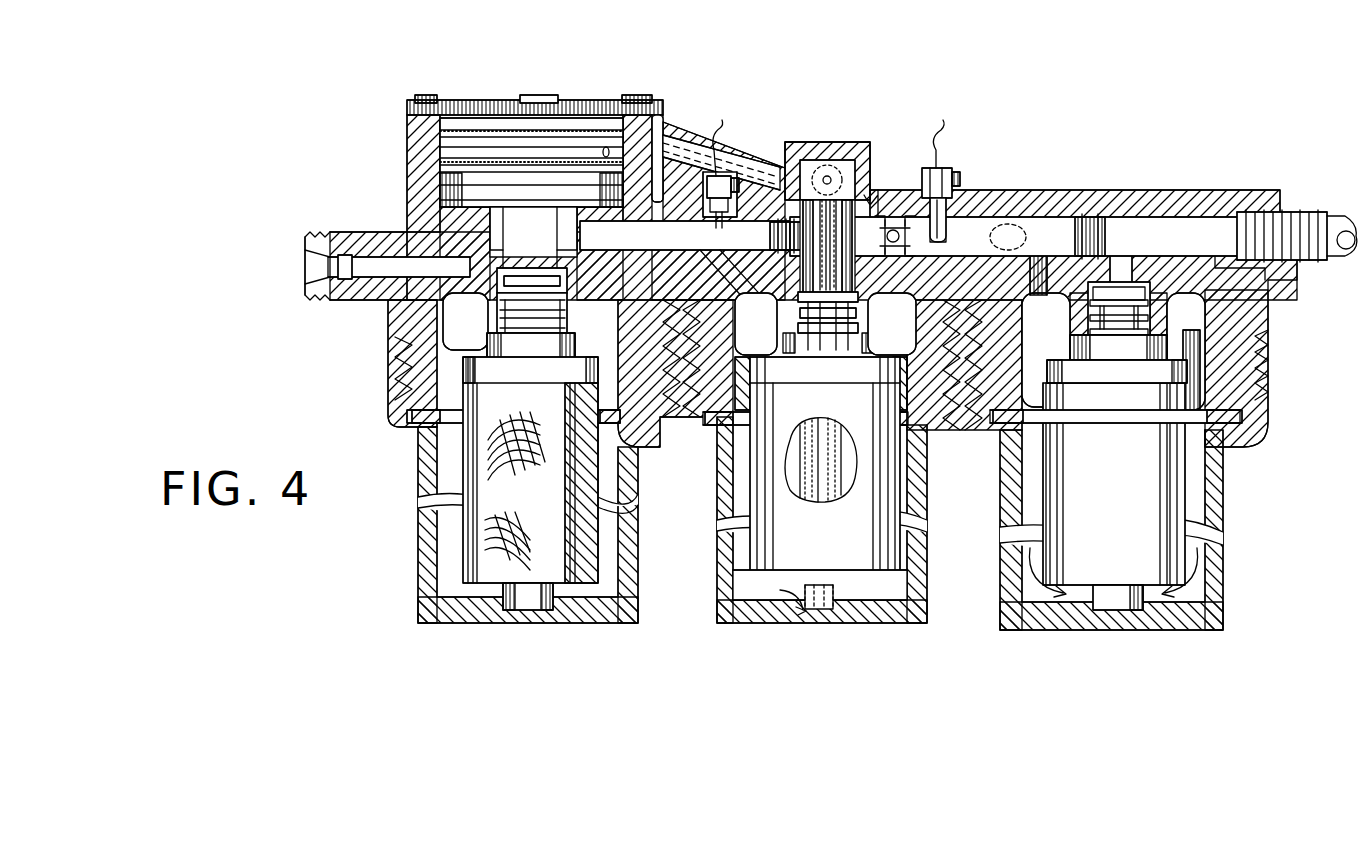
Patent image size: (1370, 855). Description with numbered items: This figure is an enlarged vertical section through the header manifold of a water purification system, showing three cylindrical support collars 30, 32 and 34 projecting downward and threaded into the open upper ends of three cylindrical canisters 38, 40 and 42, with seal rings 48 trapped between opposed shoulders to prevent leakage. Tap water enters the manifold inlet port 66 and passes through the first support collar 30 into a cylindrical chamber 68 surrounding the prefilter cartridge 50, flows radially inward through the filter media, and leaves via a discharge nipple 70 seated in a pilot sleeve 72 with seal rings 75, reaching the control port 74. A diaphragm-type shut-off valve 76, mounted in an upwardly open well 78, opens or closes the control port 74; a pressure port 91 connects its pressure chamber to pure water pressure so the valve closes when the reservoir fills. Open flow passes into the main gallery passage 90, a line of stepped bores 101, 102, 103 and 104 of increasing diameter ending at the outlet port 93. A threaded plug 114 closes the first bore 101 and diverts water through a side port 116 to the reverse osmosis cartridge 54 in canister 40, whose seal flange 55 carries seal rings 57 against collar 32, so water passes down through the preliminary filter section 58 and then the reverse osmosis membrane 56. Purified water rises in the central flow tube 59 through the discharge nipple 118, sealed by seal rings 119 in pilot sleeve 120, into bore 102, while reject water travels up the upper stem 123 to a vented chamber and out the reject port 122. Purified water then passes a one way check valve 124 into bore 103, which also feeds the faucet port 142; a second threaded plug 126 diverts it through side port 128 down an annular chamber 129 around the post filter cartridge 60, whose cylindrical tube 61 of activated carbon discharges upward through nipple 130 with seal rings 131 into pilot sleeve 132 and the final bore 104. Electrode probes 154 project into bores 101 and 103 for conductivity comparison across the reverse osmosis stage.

The support collar 30 is at (410, 327).
The support collar 32 is at (700, 430).
The support collar 34 is at (1240, 408).
The cylindrical canister 38 is at (425, 508).
The cylindrical canister 40 is at (717, 512).
The cylindrical canister 42 is at (1000, 518).
The seal rings 48 is at (415, 422).
The prefilter cartridge 50 is at (490, 463).
The reverse osmosis cartridge 54 is at (775, 549).
The seal flange 55 is at (755, 440).
The reverse osmosis membrane 56 is at (820, 572).
The seal rings 57 is at (750, 365).
The preliminary filter section 58 is at (836, 416).
The central flow tube 59 is at (835, 478).
The post filter cartridge 60 is at (1152, 501).
The cylindrical tube 61 is at (1175, 455).
The manifold inlet port 66 is at (328, 266).
The cylindrical chamber 68 is at (405, 382).
The discharge nipple 70 is at (540, 300).
The pilot sleeve 72 is at (498, 322).
The control port 74 is at (525, 215).
The seal rings 75 is at (540, 343).
The shut-off valve 76 is at (572, 106).
The well 78 is at (430, 184).
The main gallery passage 90 is at (1153, 237).
The pressure port 91 is at (678, 150).
The outlet port 93 is at (1265, 212).
The stepped bore 101 is at (630, 232).
The stepped bore 102 is at (875, 195).
The stepped bore 103 is at (1040, 210).
The stepped bore 104 is at (1218, 258).
The threaded plug 114 is at (770, 234).
The side port 116 is at (695, 232).
The discharge nipple 118 is at (852, 310).
The seal rings 119 is at (815, 325).
The pilot sleeve 120 is at (775, 310).
The reject port 122 is at (820, 160).
The upper stem 123 is at (745, 185).
The check valve 124 is at (915, 245).
The threaded plug 126 is at (1085, 217).
The side port 128 is at (1040, 270).
The annular chamber 129 is at (1255, 370).
The discharge nipple 130 is at (1150, 290).
The seal rings 131 is at (1100, 340).
The pilot sleeve 132 is at (1045, 360).
The faucet port 142 is at (1003, 222).
The electrode probes 154 is at (695, 170).